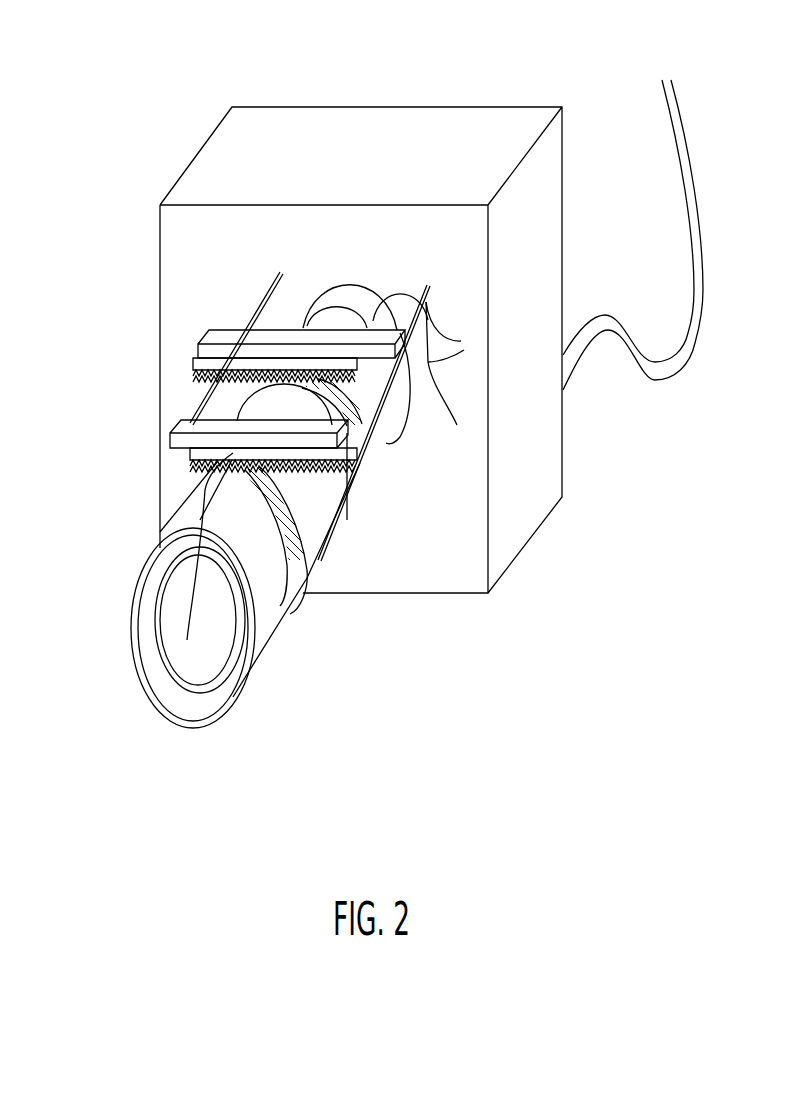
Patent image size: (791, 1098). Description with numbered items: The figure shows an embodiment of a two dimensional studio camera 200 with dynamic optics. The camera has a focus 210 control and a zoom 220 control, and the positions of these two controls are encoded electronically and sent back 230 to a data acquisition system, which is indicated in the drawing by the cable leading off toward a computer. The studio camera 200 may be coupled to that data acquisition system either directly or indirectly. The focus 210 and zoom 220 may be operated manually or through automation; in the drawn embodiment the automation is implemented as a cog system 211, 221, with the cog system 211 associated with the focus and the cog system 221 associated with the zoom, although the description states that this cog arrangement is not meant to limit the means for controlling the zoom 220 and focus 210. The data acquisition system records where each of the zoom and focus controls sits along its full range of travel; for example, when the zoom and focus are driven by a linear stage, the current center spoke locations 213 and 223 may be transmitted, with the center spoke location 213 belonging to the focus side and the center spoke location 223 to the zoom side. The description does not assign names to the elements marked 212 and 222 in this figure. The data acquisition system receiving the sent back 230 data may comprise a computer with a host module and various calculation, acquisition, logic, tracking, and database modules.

The two dimensional studio camera 200 is at (547, 527).
The focus control 210 is at (315, 592).
The cog system (focus) 211 is at (142, 460).
The connecting cable 212 is at (446, 385).
The center spoke location (focus) 213 is at (187, 640).
The zoom control 220 is at (362, 512).
The cog system (zoom) 221 is at (190, 351).
The shaft support 222 is at (457, 262).
The center spoke location (zoom) 223 is at (268, 285).
The sent back (encoded control data) 230 is at (655, 392).